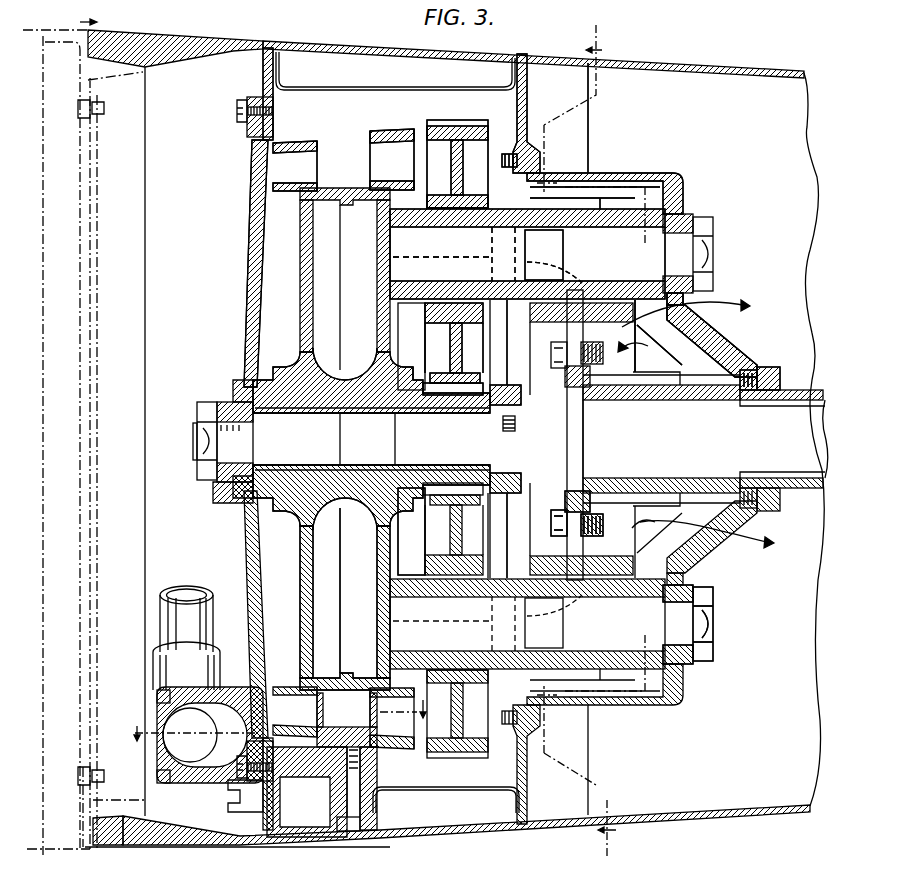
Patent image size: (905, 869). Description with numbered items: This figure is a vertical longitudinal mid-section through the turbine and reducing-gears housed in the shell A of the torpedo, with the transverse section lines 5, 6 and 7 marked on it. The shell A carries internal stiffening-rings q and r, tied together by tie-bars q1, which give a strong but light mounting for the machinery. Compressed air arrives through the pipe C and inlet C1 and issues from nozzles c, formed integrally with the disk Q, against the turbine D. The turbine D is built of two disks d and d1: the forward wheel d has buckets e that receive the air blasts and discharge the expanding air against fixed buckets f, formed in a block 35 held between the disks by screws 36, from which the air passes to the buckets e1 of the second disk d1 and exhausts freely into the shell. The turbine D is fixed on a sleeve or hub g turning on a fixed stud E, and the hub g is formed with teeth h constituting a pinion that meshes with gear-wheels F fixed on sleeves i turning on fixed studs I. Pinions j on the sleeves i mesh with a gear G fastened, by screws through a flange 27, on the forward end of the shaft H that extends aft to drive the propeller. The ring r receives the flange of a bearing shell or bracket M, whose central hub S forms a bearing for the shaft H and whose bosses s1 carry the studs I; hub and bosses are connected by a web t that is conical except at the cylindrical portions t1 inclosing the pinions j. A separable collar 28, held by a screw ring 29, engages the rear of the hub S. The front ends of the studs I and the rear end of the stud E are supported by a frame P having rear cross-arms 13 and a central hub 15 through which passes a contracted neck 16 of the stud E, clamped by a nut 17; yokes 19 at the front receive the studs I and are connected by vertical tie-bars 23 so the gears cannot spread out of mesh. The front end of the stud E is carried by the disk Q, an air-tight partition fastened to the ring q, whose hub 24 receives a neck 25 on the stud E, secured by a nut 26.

The shell of the torpedo A is at (454, 438).
The section line 5 5 is at (82, 13).
The section line 6 6 is at (580, 445).
The section line 7 7 is at (280, 722).
The internal stiffening-ring q is at (262, 75).
The tie-bars q1 is at (324, 98).
The disk or head Q is at (250, 312).
The internal stiffening-ring r is at (545, 113).
The turbine-buckets e is at (270, 713).
The turbine-buckets e1 is at (392, 430).
The gear-wheels F is at (433, 120).
The fixed studs I is at (527, 421).
The sleeves or hubs i is at (603, 286).
The bearing shell or bracket M is at (605, 180).
The cylindrical portions of web t1 is at (607, 173).
The pinions j is at (596, 209).
The frame P is at (502, 349).
The yokes 19 is at (411, 531).
The vertical tie-bars 23 is at (422, 372).
The turbine D is at (345, 599).
The forward wheel or disk d is at (295, 602).
The second disk d1 is at (369, 602).
The nut 26 is at (197, 409).
The neck 25 is at (226, 446).
The hub 24 is at (238, 491).
The fixed stud E is at (371, 439).
The teeth or pinion h is at (425, 394).
The sleeve or hub g is at (412, 476).
The gear G is at (555, 548).
The nut 17 is at (524, 408).
The contracted neck 16 is at (520, 432).
The central hub 15 is at (524, 480).
The cross-arms 13 is at (508, 512).
The flange 27 is at (598, 532).
The shaft H is at (705, 439).
The central hub or sleeve S is at (696, 335).
The web or shell t is at (712, 365).
The separable collar 28 is at (752, 371).
The screw ring or nut 29 is at (780, 378).
The hubs or bosses s1 is at (698, 667).
The pipe C is at (178, 632).
The nozzles c is at (215, 748).
The inlet C1 is at (190, 735).
The fixed buckets f is at (347, 710).
The block 35 is at (377, 747).
The screws 36 is at (364, 806).